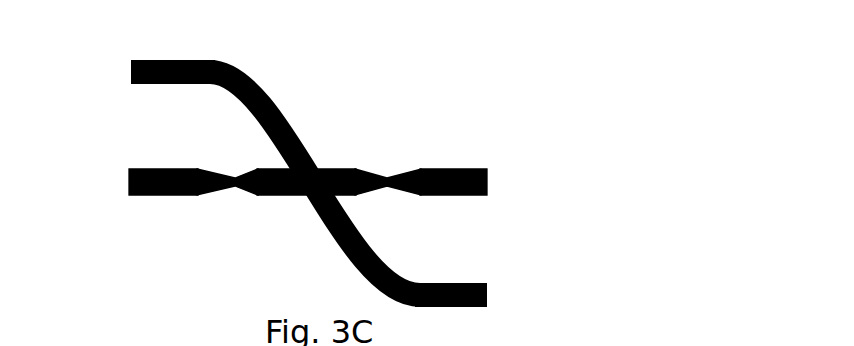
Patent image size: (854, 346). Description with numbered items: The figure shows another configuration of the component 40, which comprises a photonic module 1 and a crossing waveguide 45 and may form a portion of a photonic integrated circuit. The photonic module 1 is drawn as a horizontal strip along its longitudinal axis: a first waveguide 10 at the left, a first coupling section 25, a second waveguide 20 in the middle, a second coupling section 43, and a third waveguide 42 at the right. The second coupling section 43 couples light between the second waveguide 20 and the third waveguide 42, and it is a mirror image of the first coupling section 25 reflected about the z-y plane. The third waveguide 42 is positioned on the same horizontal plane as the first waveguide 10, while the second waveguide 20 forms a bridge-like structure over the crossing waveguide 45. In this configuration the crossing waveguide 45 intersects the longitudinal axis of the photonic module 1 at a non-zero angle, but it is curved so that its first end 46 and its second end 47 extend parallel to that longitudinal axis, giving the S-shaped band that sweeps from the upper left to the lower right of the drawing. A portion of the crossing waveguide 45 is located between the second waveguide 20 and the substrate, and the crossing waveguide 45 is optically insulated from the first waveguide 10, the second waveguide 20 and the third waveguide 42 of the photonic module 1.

The photonic module 1 is at (274, 203).
The first waveguide 10 is at (165, 193).
The second waveguide 20 is at (347, 175).
The first coupling section 25 is at (228, 168).
The component 40 is at (597, 189).
The third waveguide 42 is at (463, 168).
The second coupling section 43 is at (390, 190).
The crossing waveguide 45 is at (305, 130).
The first end 46 is at (150, 70).
The second end 47 is at (475, 280).